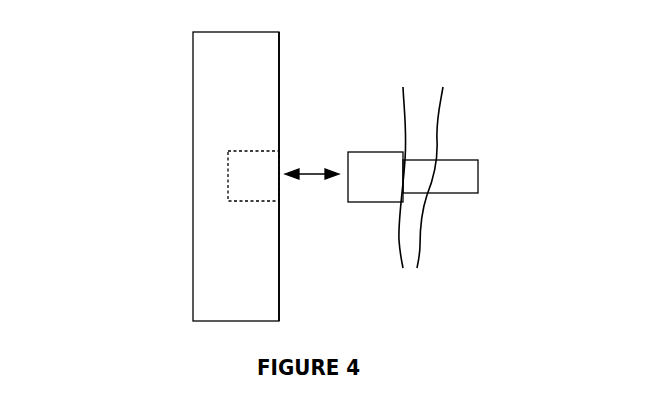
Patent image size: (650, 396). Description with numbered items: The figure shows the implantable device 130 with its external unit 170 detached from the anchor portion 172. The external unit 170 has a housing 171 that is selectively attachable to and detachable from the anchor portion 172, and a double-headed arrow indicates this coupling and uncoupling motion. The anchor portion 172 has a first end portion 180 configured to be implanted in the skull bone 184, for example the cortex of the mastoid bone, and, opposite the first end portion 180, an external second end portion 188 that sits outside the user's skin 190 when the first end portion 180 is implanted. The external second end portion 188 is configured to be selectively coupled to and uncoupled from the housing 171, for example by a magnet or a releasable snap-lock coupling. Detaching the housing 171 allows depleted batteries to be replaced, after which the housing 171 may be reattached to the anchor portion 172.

The implantable device 130 is at (121, 50).
The external unit 170 is at (193, 52).
The housing 171 is at (279, 40).
The anchor portion 172 is at (458, 160).
The first end portion 180 is at (478, 175).
The skull bone 184 is at (437, 104).
The external second end portion 188 is at (362, 152).
The skin 190 is at (405, 105).